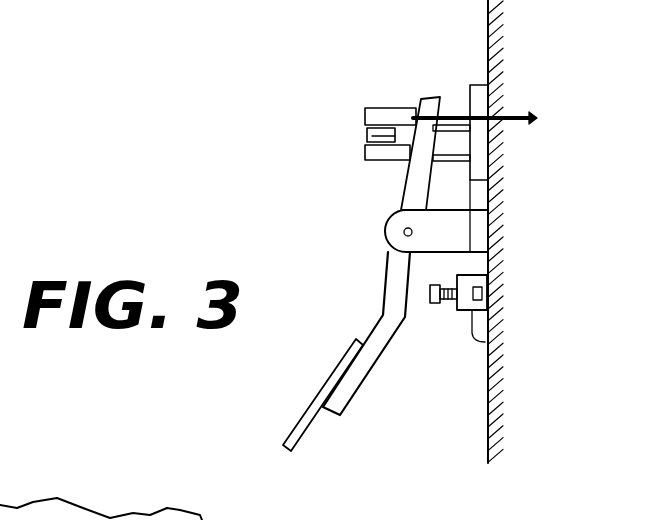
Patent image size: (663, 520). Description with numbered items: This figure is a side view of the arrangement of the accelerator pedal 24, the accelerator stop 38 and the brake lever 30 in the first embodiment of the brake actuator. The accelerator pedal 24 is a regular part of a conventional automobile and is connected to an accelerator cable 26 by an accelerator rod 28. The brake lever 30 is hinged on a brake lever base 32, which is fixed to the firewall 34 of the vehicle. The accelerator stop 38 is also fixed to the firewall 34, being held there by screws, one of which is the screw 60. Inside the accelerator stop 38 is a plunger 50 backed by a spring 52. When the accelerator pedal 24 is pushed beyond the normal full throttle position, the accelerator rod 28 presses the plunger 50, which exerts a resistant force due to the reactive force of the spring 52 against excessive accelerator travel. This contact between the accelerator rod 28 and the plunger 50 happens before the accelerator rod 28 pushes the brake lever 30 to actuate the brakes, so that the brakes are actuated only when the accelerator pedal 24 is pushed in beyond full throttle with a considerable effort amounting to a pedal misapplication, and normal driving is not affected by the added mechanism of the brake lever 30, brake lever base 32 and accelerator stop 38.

The accelerator pedal 24 is at (323, 405).
The accelerator cable 26 is at (522, 113).
The accelerator rod 28 is at (413, 187).
The brake lever 30 is at (372, 138).
The brake lever base 32 is at (388, 108).
The firewall 34 is at (490, 196).
The accelerator stop 38 is at (471, 270).
The plunger 50 is at (433, 304).
The spring 52 is at (453, 303).
The screw 60 is at (488, 342).